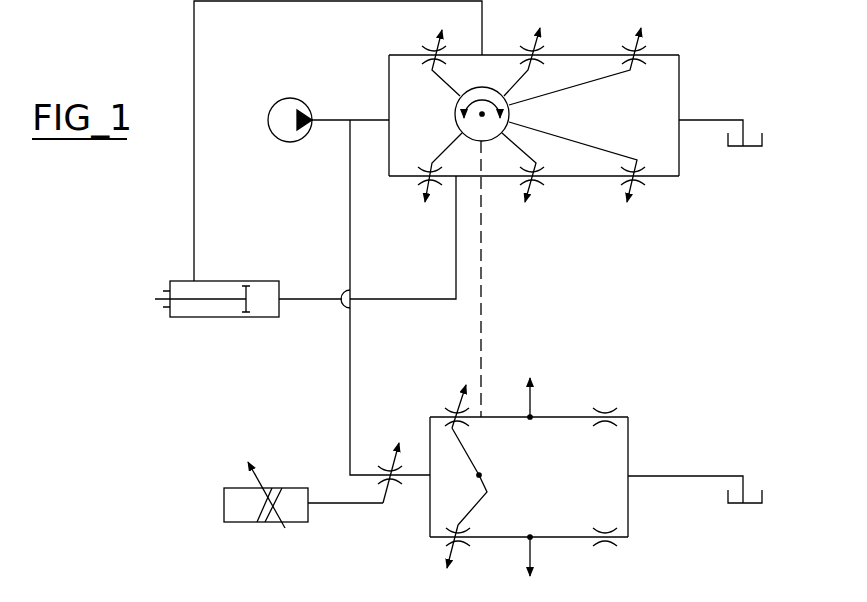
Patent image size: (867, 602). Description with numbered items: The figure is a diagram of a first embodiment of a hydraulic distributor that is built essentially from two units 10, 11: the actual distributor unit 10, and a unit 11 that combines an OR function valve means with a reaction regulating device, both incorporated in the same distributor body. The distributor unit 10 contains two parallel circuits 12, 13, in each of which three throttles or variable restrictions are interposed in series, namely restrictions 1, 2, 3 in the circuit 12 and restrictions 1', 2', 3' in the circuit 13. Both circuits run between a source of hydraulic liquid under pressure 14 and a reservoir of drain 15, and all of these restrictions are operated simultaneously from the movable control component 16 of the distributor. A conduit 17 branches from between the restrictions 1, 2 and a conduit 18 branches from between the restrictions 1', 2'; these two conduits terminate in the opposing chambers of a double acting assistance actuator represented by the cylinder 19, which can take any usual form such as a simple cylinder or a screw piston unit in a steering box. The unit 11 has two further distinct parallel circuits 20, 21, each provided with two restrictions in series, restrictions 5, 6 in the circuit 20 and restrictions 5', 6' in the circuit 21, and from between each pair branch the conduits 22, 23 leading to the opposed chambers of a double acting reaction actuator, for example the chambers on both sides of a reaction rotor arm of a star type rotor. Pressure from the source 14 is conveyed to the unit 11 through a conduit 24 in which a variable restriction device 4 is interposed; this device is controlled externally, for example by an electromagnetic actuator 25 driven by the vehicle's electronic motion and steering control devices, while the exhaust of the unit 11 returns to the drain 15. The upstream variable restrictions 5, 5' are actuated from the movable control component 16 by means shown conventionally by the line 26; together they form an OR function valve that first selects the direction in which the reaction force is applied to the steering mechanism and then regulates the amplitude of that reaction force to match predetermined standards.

The variable restriction 1 is at (441, 48).
The variable restriction 2 is at (527, 48).
The variable restriction 3 is at (579, 52).
The variable restriction 1' is at (440, 184).
The variable restriction 2' is at (523, 184).
The variable restriction 3' is at (577, 179).
The variable restriction device 4 is at (386, 473).
The upstream variable restriction 5 is at (466, 440).
The upstream variable restriction 5' is at (452, 558).
The restriction 6 is at (605, 400).
The restriction 6' is at (605, 551).
The distributor unit 10 is at (684, 57).
The unit 11 is at (632, 418).
The circuit 12 is at (582, 55).
The circuit 13 is at (573, 177).
The source of hydraulic liquid under pressure 14 is at (270, 118).
The reservoir of drain 15 is at (695, 296).
The movable control component 16 is at (456, 118).
The conduit 17 is at (318, 301).
The conduit 18 is at (367, 242).
The cylinder 19 is at (228, 281).
The circuit 20 is at (562, 417).
The circuit 21 is at (552, 538).
The conduit 22 is at (530, 384).
The conduit 23 is at (530, 568).
The conduit 24 is at (350, 353).
The electromagnetic actuator 25 is at (303, 492).
The line 26 is at (486, 300).